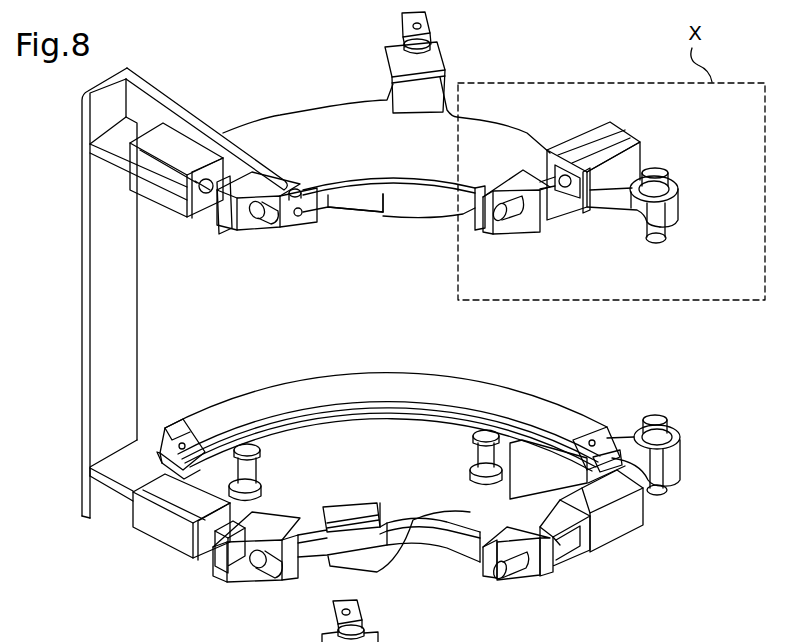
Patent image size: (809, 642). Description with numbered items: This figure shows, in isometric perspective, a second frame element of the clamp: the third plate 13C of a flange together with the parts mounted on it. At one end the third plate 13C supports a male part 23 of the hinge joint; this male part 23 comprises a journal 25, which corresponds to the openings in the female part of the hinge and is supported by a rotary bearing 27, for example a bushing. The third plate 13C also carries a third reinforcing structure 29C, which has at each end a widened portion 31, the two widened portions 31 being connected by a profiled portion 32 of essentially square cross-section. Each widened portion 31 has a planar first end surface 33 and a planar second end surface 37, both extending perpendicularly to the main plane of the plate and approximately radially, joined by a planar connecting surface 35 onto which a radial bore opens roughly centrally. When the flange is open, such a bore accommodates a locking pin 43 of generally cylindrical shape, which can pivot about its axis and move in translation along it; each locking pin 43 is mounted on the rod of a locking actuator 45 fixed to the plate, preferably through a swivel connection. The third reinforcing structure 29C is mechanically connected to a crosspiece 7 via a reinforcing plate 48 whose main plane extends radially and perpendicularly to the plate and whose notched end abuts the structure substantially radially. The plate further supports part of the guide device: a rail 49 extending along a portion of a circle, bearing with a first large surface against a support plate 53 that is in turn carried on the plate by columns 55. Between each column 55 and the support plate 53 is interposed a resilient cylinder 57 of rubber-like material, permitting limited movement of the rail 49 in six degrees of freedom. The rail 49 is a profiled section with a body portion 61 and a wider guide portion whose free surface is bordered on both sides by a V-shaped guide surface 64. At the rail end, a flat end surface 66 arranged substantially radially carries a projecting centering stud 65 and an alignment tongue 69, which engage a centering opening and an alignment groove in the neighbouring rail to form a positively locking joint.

The crosspiece 7 is at (127, 322).
The reinforcing plate 48 is at (150, 103).
The third plate 13C is at (323, 118).
The locking actuator 45 is at (193, 150).
The second end surface 37 is at (230, 222).
The connecting surface 35 is at (242, 237).
The locking pin 43 is at (256, 220).
The first end surface 33 is at (285, 228).
The widened portion 31 is at (262, 175).
The profiled portion 32 is at (410, 188).
The third reinforcing structure 29C is at (413, 212).
The male part 23 is at (695, 210).
The journal 25 is at (653, 170).
The rotary bearing 27 is at (670, 180).
The rail 49 is at (393, 382).
The support plate 53 is at (328, 420).
The body portion 61 is at (380, 415).
The guide surface 64 is at (233, 440).
The centering stud 65 is at (187, 443).
The flat end surface 66 is at (173, 443).
The alignment tongue 69 is at (173, 457).
The resilient cylinder 57 is at (263, 443).
The column 55 is at (240, 468).